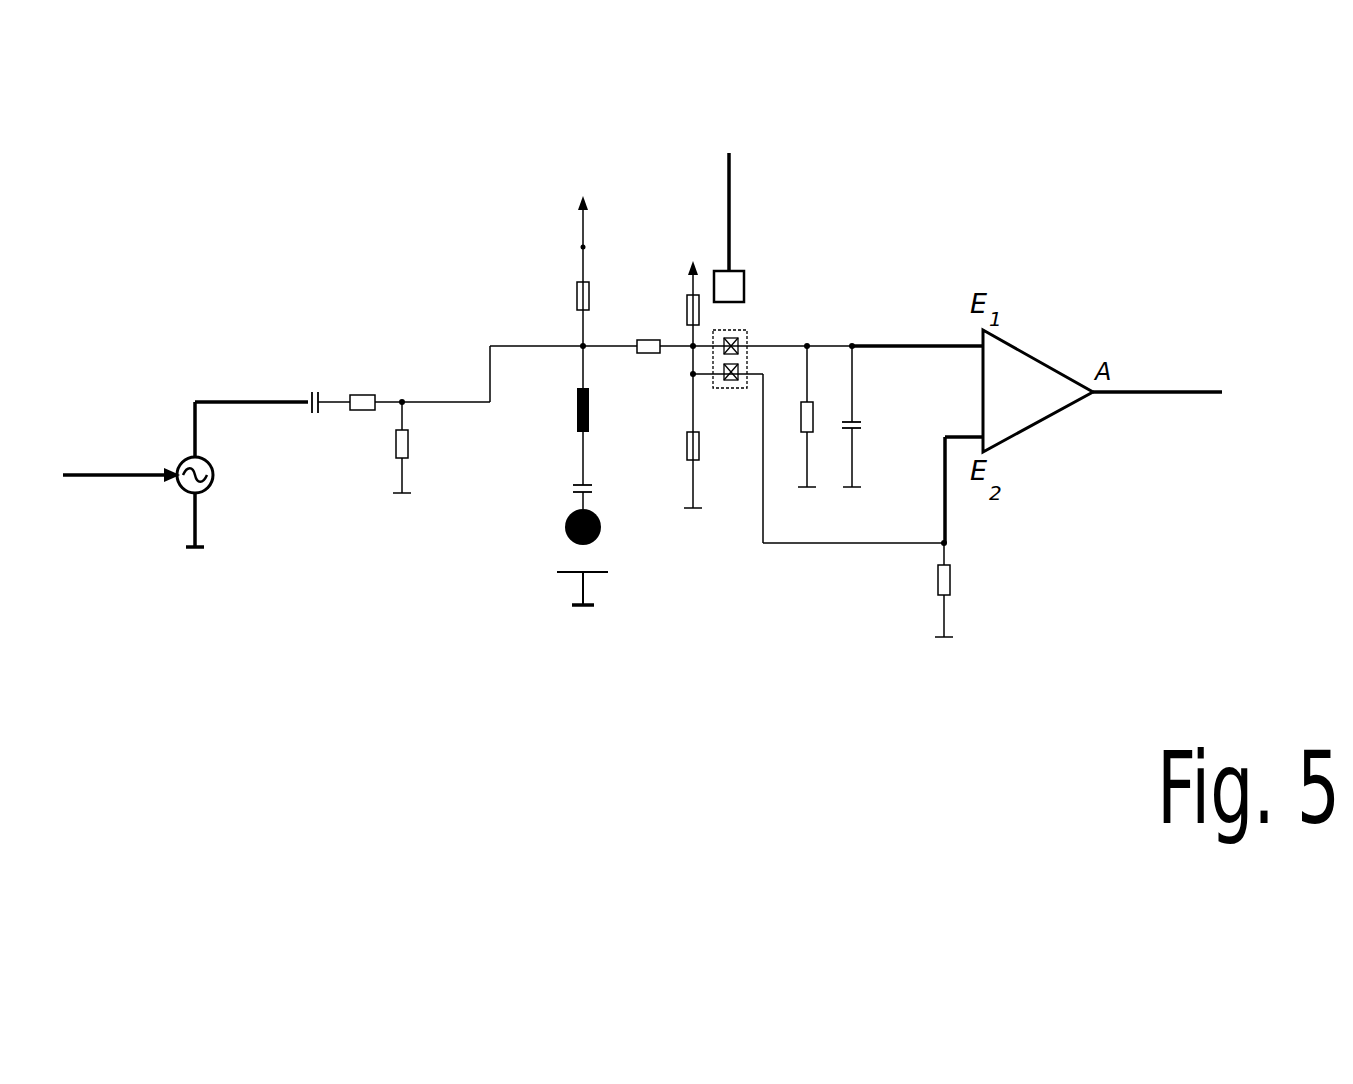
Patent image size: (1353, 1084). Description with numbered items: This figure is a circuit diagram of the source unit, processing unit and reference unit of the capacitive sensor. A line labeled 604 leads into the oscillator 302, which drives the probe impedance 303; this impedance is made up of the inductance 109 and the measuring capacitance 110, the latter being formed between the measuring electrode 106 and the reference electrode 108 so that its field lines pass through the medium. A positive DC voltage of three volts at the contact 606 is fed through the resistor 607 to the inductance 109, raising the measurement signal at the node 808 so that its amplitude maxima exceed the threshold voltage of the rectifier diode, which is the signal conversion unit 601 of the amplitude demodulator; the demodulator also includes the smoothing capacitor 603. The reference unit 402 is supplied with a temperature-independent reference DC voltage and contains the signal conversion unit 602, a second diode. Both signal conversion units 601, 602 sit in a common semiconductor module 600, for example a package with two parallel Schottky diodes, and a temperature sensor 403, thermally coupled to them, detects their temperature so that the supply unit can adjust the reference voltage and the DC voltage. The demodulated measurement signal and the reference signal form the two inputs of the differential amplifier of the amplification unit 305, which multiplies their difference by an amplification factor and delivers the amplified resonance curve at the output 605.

The input signal 604 is at (102, 478).
The oscillator 302 is at (213, 472).
The probe impedance 303 is at (456, 300).
The contact 606 is at (582, 222).
The resistor 607 is at (589, 297).
The connection node 808 is at (585, 350).
The inductance 109 is at (572, 405).
The measuring electrode 106 is at (598, 520).
The measuring capacitance 110 is at (566, 557).
The reference electrode 108 is at (595, 575).
The reference unit 402 is at (669, 266).
The temperature sensor 403 is at (744, 283).
The semiconductor module 600 is at (748, 310).
The signal conversion unit 601 is at (738, 332).
The signal conversion unit 602 is at (740, 388).
The amplification unit 305 is at (833, 316).
The smoothing capacitor 603 is at (856, 430).
The output 605 is at (1210, 388).